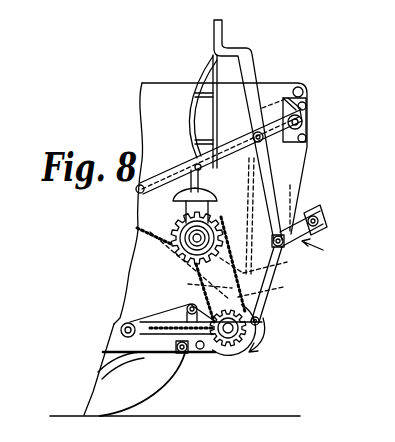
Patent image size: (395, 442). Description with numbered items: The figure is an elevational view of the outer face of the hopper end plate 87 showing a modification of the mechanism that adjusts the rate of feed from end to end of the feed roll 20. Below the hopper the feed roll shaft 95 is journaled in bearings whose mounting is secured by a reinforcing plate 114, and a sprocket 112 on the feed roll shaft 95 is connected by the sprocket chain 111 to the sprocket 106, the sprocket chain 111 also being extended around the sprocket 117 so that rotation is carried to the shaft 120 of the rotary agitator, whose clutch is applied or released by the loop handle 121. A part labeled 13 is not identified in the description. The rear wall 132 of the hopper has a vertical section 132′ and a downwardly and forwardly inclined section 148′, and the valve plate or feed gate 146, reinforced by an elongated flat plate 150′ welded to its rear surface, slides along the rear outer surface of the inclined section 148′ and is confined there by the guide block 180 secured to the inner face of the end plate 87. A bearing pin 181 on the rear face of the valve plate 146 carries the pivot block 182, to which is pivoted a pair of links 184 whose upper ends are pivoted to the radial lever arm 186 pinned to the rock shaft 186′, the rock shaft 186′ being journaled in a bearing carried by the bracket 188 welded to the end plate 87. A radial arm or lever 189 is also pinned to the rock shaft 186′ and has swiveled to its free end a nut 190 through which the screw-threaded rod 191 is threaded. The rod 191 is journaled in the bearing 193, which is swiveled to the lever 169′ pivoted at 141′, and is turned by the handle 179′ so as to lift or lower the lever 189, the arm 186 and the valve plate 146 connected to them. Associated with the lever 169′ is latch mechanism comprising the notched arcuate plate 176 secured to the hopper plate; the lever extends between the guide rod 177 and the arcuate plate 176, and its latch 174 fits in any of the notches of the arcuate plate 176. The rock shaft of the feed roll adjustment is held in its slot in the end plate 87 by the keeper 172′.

The shoe 13 is at (101, 390).
The feed roll 20 is at (240, 357).
The hopper end plate 87 is at (273, 92).
The feed roll shaft 95 is at (229, 349).
The sprocket 106 is at (138, 309).
The sprocket chain 111 is at (173, 336).
The sprocket 112 is at (259, 321).
The reinforcing plate 114 is at (192, 354).
The sprocket 117 is at (192, 254).
The agitator shaft 120 is at (193, 239).
The loop handle 121 is at (178, 198).
The rear wall 132 is at (262, 108).
The vertical section 132′ is at (238, 216).
The pivot 141′ is at (302, 122).
The valve plate or feed gate 146 is at (197, 282).
The inclined section 148′ is at (221, 271).
The elongated flat plate 150′ is at (260, 303).
The lever 169′ is at (144, 148).
The keeper 172′ is at (298, 103).
The latch 174 is at (194, 163).
The notched arcuate plate 176 is at (192, 116).
The guide rod 177 is at (214, 107).
The handle 179′ is at (222, 31).
The guide block 180 is at (240, 285).
The bearing pin 181 is at (258, 262).
The pivot block 182 is at (287, 277).
The links 184 is at (271, 232).
The radial lever arm 186 is at (290, 200).
The rock shaft 186′ is at (326, 211).
The bracket 188 is at (284, 238).
The radial arm or lever 189 is at (328, 250).
The nut 190 is at (262, 233).
The screw-threaded rod 191 is at (268, 199).
The bearing 193 is at (221, 152).